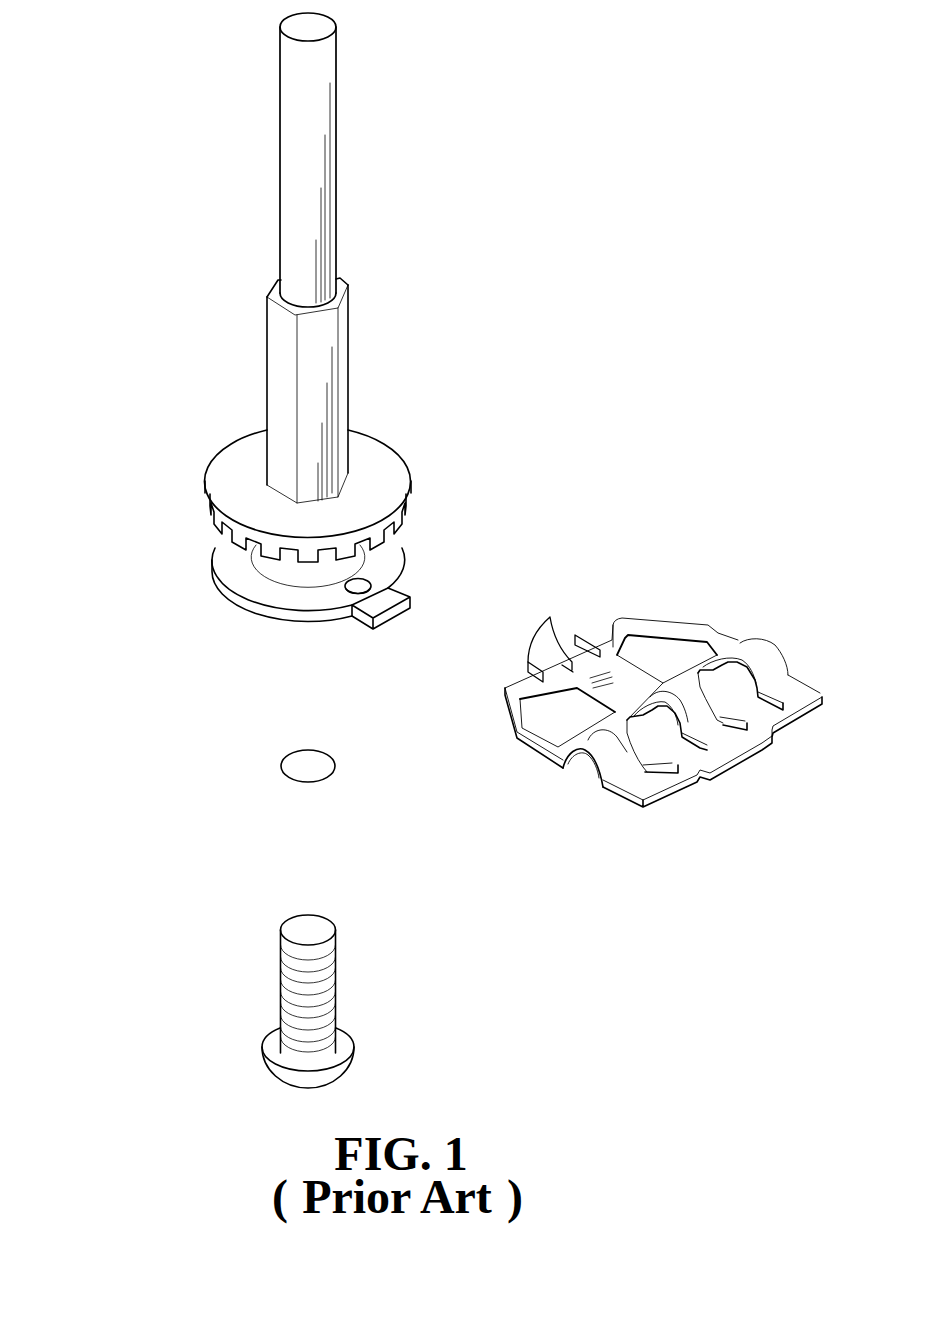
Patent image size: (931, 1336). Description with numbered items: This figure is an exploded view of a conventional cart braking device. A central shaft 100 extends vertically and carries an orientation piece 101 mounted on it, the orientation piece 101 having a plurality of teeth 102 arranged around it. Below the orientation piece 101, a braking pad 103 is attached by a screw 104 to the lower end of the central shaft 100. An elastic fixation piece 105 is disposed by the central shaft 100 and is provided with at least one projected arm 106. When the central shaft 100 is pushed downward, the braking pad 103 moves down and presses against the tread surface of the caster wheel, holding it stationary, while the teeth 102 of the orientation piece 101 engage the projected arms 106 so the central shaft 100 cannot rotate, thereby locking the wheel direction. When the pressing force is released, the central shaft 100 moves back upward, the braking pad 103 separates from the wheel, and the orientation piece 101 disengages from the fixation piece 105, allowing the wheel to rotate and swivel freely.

The central shaft 100 is at (322, 195).
The orientation piece 101 is at (398, 468).
The teeth 102 is at (400, 558).
The braking pad 103 is at (218, 762).
The screw 104 is at (293, 997).
The fixation piece 105 is at (717, 637).
The projected arm 106 is at (583, 633).